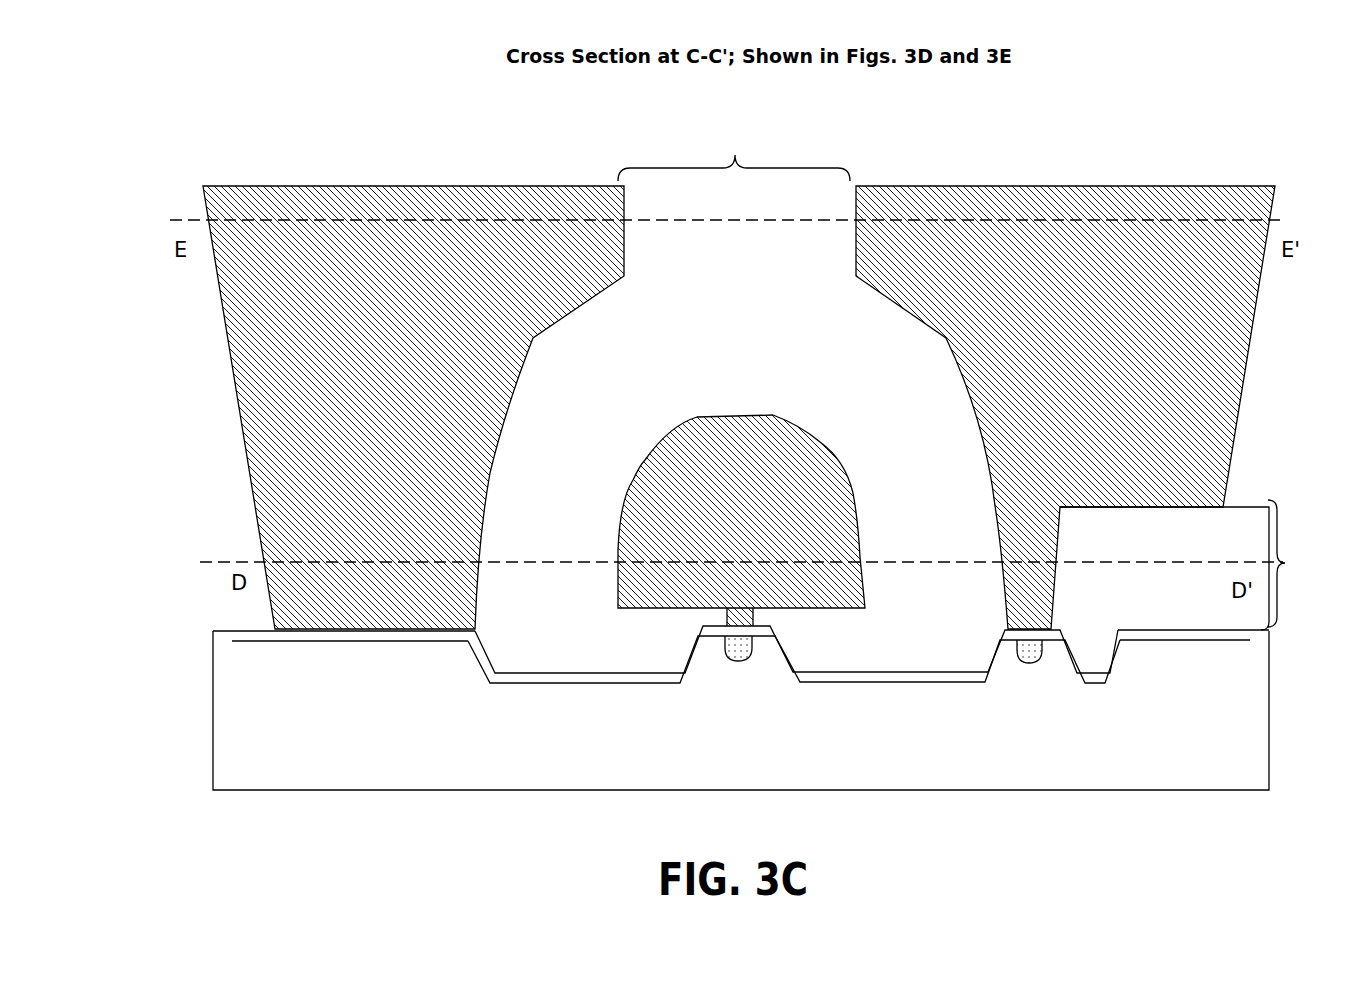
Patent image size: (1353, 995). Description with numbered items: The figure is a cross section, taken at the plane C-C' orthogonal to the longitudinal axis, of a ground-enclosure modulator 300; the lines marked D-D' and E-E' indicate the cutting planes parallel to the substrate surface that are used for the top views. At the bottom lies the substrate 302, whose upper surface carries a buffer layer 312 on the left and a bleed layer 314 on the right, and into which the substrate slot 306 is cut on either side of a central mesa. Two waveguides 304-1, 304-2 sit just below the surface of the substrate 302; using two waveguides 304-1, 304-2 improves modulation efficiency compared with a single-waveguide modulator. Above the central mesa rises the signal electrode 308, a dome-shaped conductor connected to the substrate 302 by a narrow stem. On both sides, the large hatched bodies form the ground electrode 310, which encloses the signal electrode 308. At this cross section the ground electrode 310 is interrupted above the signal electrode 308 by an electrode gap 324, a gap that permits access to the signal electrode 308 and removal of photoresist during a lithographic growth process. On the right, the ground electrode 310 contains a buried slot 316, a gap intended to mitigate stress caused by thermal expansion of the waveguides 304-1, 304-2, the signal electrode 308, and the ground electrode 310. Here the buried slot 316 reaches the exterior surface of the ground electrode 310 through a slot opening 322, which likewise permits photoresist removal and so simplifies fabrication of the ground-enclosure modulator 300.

The ground-enclosure modulator 300 is at (252, 36).
The substrate 302 is at (412, 792).
The waveguide 304-1 is at (738, 662).
The waveguide 304-2 is at (1028, 664).
The substrate slot 306 is at (585, 675).
The signal electrode 308 is at (740, 413).
The ground electrode 310 is at (394, 186).
The buffer layer 312 is at (315, 634).
The bleed layer 314 is at (1183, 632).
The buried slot 316 is at (1079, 530).
The slot opening 322 is at (1300, 563).
The electrode gap 324 is at (734, 155).